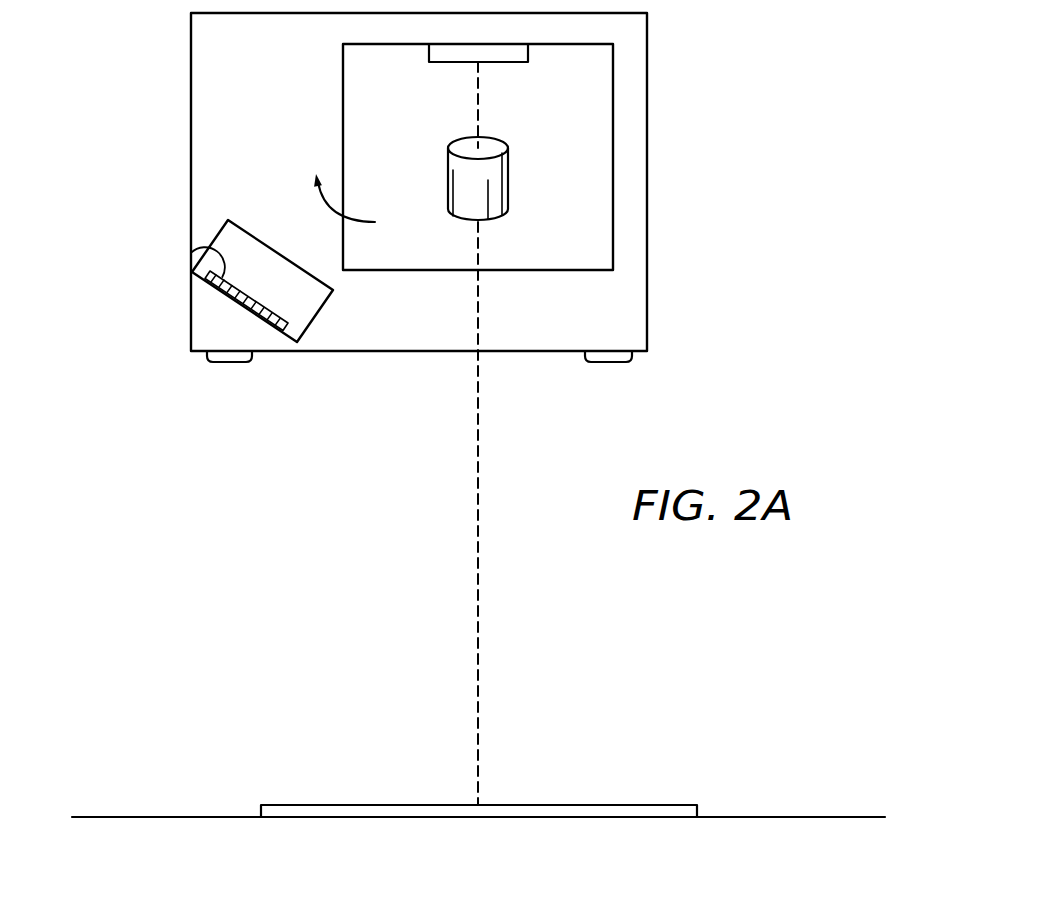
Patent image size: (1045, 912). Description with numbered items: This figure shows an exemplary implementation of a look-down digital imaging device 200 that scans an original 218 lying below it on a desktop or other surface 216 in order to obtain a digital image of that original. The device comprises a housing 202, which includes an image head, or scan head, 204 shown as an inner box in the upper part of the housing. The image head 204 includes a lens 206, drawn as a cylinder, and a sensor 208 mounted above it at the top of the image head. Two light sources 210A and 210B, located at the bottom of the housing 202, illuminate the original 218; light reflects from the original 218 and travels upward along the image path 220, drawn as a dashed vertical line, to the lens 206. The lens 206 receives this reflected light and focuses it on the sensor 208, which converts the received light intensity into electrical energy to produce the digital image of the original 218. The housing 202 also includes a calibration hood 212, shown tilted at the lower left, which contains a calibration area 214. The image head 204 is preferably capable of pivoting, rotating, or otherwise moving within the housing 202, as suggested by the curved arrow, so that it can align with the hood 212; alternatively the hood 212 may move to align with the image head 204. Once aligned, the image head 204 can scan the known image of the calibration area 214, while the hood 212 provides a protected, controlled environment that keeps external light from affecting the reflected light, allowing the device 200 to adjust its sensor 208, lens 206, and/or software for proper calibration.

The look-down digital imaging device 200 is at (677, 181).
The housing 202 is at (191, 98).
The image head 204 is at (343, 103).
The lens 206 is at (508, 177).
The sensor 208 is at (528, 50).
The light source 210A is at (222, 362).
The light source 210B is at (612, 362).
The calibration hood 212 is at (320, 313).
The calibration area 214 is at (192, 253).
The desktop 216 is at (785, 818).
The original 218 is at (563, 800).
The image path 220 is at (478, 525).